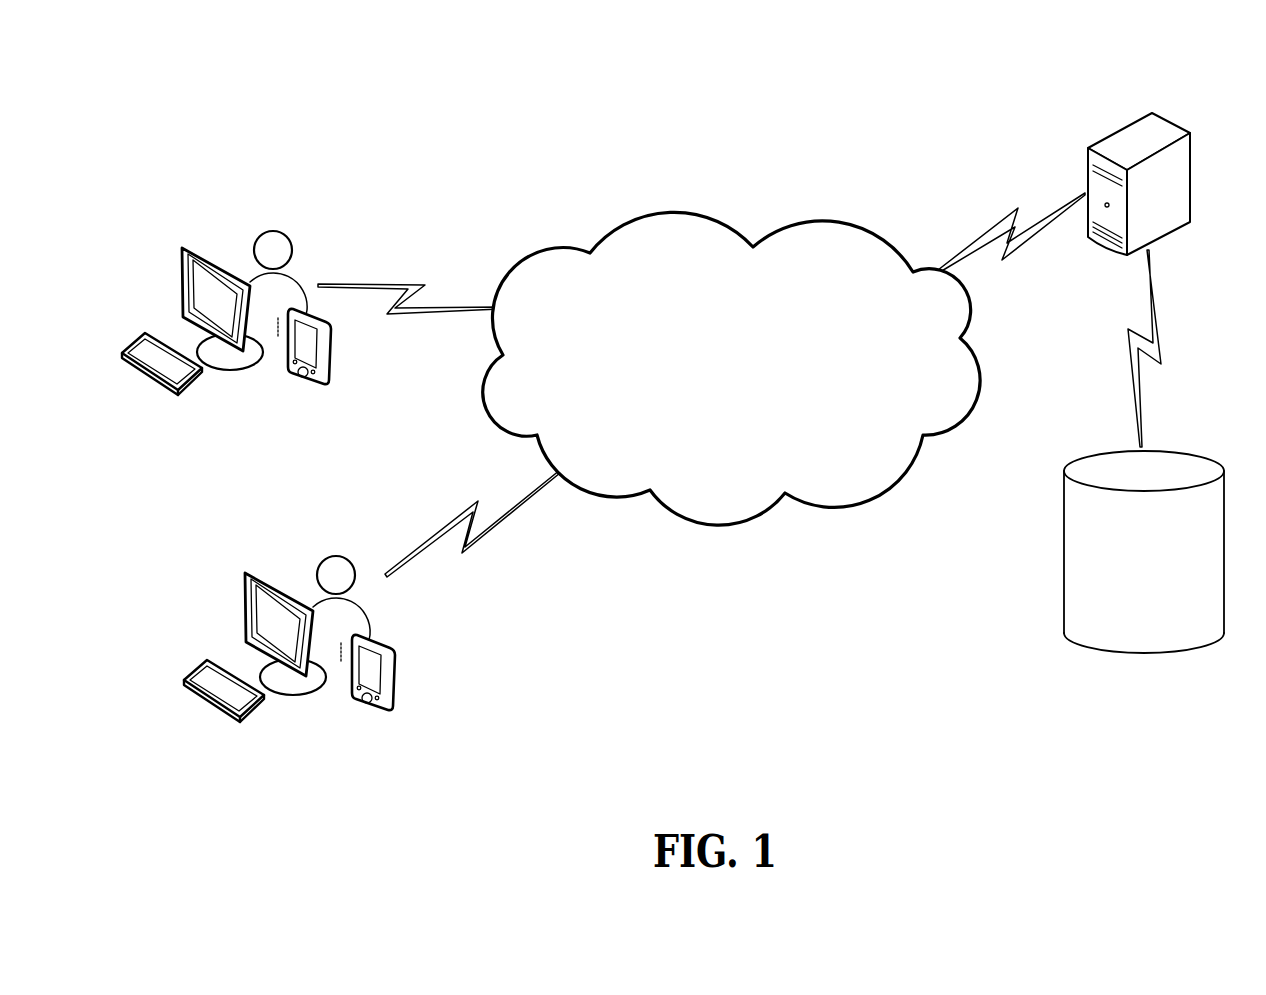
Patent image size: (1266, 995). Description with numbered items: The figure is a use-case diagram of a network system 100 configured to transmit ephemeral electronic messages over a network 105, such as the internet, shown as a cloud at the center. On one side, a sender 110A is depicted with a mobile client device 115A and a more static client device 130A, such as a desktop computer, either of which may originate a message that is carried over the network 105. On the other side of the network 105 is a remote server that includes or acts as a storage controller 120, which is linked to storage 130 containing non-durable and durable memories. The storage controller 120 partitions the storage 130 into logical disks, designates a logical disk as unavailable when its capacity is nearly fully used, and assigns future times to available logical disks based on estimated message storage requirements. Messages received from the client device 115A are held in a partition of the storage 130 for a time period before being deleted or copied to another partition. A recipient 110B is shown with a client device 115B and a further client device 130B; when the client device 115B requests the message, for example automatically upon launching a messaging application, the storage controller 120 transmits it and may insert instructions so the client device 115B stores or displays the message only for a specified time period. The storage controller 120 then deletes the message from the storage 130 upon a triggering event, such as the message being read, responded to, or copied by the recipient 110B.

The network system 100 is at (363, 70).
The network 105 is at (533, 263).
The sender 110A is at (257, 238).
The recipient 110B is at (357, 602).
The mobile client device 115A is at (308, 383).
The client device 115B is at (385, 710).
The storage controller 120 is at (1168, 125).
The storage 130 is at (1177, 648).
The static client device 130A is at (142, 342).
The keyboard 130B is at (198, 667).